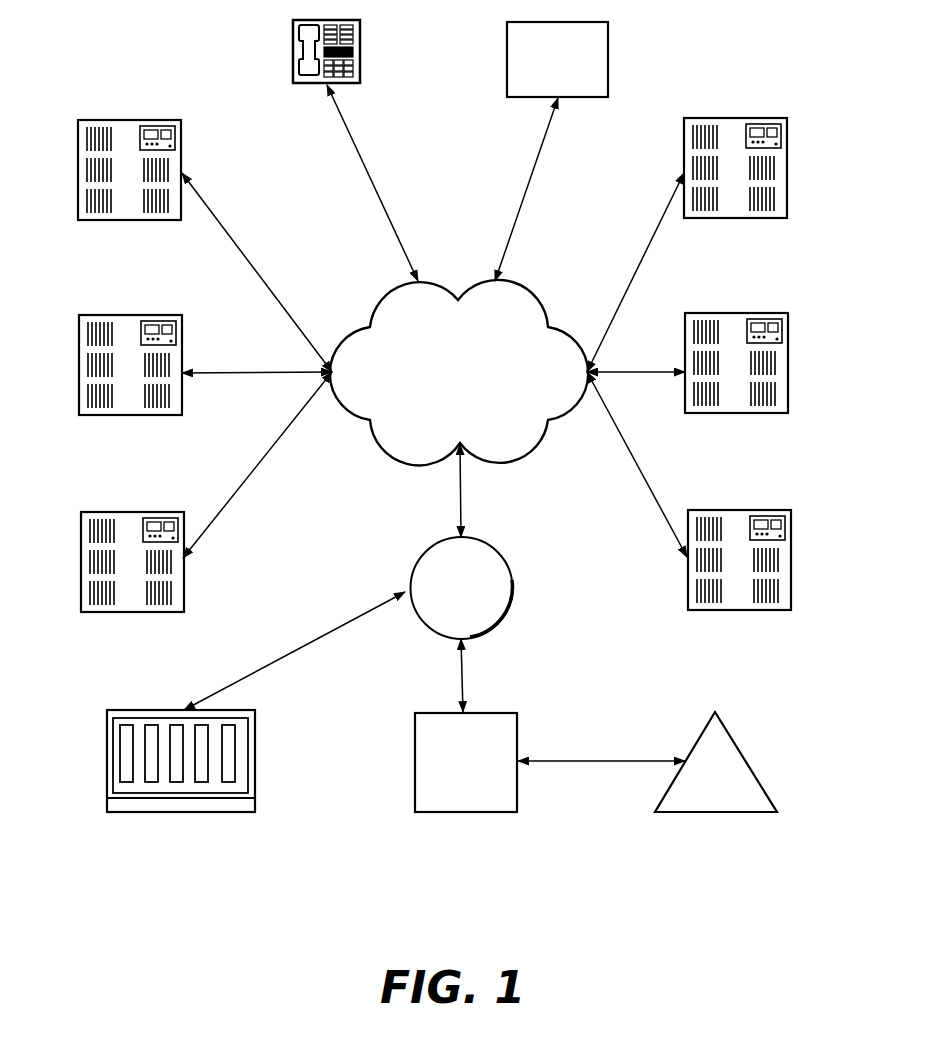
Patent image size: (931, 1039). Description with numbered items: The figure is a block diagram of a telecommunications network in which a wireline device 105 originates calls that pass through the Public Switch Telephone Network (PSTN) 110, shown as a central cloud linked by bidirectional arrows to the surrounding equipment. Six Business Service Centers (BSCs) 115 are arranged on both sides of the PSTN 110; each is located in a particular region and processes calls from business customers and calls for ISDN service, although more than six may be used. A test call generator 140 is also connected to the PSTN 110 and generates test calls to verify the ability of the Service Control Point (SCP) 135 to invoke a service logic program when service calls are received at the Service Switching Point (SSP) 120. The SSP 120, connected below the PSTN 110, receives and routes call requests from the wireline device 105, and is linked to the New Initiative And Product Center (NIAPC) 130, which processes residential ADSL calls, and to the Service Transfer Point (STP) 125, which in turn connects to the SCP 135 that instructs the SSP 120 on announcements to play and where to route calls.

The wireline device 105 is at (293, 44).
The Public Switch Telephone Network (PSTN) 110 is at (459, 372).
The Business Service Centers (BSCs) 115 is at (125, 120).
The Service Switching Point (SSP) 120 is at (513, 596).
The Service Transfer Point (STP) 125 is at (417, 813).
The New Initiative And Product Center (NIAPC) 130 is at (180, 813).
The Service Control Point (SCP) 135 is at (655, 813).
The test call generator 140 is at (608, 60).